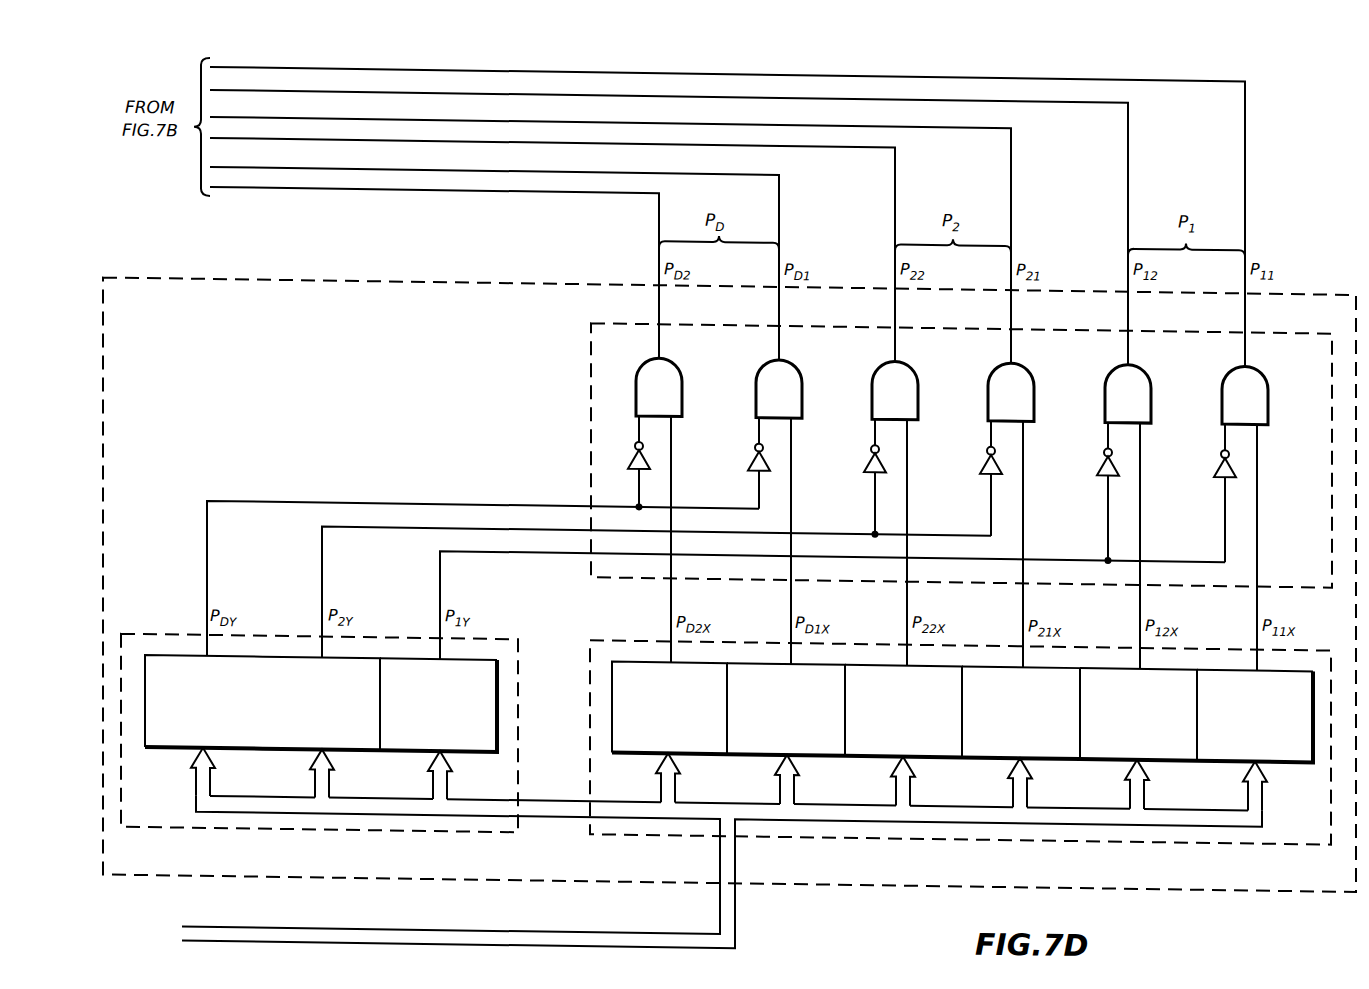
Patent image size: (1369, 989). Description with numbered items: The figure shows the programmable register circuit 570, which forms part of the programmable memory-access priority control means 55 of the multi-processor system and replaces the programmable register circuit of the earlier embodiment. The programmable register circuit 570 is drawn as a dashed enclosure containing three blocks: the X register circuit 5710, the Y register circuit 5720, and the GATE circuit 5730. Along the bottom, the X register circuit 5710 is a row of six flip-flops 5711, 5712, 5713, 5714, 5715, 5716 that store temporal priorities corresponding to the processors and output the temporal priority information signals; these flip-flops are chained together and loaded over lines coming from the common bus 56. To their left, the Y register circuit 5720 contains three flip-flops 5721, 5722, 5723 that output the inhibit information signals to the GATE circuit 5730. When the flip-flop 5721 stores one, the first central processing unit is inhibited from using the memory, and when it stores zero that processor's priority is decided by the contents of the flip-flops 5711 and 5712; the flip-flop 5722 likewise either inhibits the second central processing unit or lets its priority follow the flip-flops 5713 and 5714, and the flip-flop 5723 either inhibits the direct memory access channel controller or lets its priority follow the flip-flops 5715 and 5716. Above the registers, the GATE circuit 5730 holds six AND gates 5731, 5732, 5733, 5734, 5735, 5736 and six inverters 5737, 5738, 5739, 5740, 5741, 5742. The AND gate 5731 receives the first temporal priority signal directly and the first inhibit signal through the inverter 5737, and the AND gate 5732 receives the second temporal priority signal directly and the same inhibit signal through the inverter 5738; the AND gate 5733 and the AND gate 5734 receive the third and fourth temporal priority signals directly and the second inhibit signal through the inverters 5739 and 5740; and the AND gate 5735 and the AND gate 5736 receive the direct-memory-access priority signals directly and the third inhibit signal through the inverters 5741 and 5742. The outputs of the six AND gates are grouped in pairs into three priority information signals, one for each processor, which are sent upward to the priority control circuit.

The programmable register circuit 570 is at (729, 584).
The programmable memory-access priority control means 55 is at (326, 355).
The GATE circuit 5730 is at (590, 444).
The AND GATE 5731 is at (1258, 358).
The AND GATE 5732 is at (1141, 360).
The AND GATE 5733 is at (1024, 361).
The AND GATE 5734 is at (908, 359).
The AND GATE 5735 is at (792, 361).
The AND GATE 5736 is at (672, 363).
The inverter 5737 is at (1215, 442).
The inverter 5738 is at (1098, 444).
The inverter 5739 is at (981, 446).
The inverter 5740 is at (866, 447).
The inverter 5741 is at (750, 449).
The inverter 5742 is at (645, 447).
The X register circuit 5710 is at (1060, 822).
The flip-flop 5711 is at (1291, 744).
The flip-flop 5712 is at (1181, 744).
The flip-flop 5713 is at (1061, 744).
The flip-flop 5714 is at (946, 744).
The flip-flop 5715 is at (826, 744).
The flip-flop 5716 is at (708, 744).
The Y register circuit 5720 is at (408, 824).
The flip-flop 5721 is at (481, 744).
The flip-flop 5722 is at (365, 744).
The flip-flop 5723 is at (245, 744).
The common bus 56 is at (306, 922).